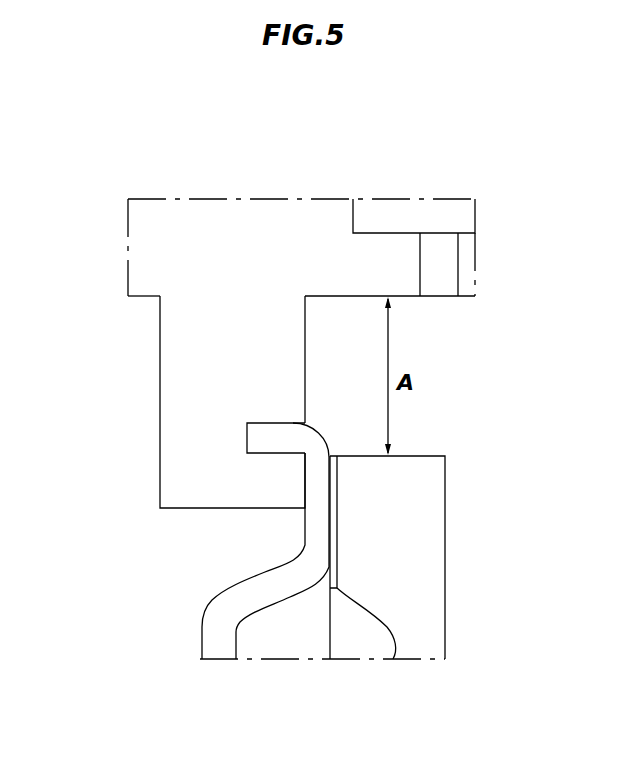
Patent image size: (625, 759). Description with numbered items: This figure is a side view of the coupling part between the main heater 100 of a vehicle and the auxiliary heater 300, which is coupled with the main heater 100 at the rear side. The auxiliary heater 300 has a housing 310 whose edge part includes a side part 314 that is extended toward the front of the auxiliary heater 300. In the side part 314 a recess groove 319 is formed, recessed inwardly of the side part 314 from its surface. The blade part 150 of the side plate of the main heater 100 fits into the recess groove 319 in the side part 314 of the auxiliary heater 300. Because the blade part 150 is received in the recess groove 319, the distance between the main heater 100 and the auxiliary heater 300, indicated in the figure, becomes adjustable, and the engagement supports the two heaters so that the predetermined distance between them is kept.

The auxiliary heater 300 is at (336, 190).
The housing 310 is at (373, 245).
The side part 314 is at (193, 363).
The recess groove 319 is at (255, 434).
The blade part 150 is at (278, 437).
The main heater 100 is at (428, 632).